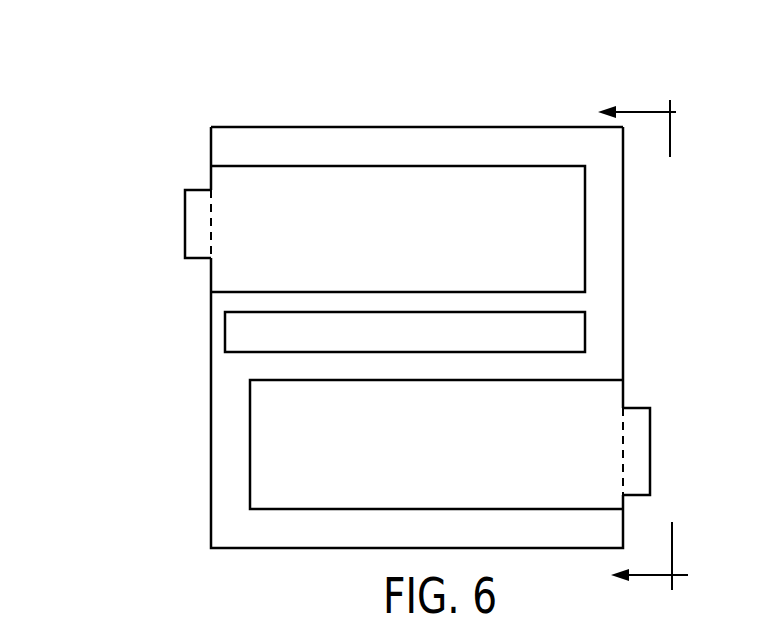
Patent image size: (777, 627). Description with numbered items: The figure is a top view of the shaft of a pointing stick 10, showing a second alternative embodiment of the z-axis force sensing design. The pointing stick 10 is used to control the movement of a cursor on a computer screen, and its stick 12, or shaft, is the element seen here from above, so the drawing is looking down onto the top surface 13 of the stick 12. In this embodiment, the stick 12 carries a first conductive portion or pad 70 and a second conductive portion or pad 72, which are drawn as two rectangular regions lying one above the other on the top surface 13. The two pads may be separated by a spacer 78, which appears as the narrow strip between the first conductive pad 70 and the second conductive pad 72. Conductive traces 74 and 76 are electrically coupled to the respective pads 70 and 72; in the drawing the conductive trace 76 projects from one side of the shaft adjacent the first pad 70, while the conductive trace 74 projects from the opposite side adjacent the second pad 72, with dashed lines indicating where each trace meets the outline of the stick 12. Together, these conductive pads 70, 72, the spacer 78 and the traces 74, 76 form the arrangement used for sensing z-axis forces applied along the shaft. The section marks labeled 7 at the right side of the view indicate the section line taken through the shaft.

The pointing stick 10 is at (122, 440).
The stick 12 is at (210, 97).
The top surface 13 is at (397, 145).
The first conductive portion 70 is at (432, 242).
The second conductive portion 72 is at (452, 455).
The conductive trace 74 is at (635, 430).
The conductive trace 76 is at (197, 212).
The spacer 78 is at (562, 330).
The section line 7- 7 is at (652, 343).